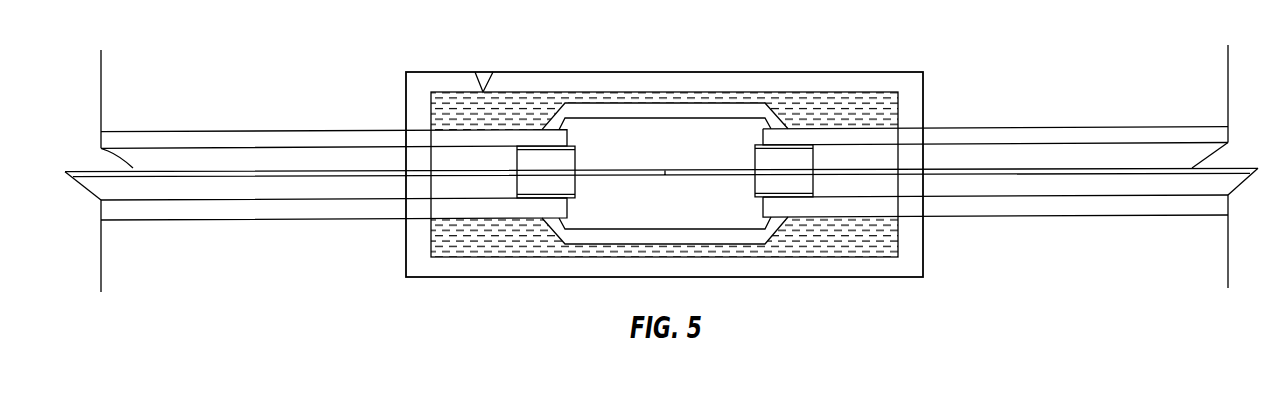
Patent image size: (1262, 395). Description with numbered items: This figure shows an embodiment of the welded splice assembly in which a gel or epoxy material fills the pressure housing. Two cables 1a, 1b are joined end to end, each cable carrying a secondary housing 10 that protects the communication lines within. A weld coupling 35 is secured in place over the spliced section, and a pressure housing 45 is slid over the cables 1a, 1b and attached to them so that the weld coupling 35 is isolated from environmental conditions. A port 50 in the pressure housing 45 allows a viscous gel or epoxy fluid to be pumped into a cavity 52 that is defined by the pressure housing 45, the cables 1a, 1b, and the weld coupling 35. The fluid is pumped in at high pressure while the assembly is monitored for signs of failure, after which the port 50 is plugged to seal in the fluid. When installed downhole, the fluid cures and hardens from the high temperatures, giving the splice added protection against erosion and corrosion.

The secondary housing 10 is at (661, 156).
The cable 1a is at (245, 131).
The cable 1b is at (975, 128).
The weld coupling 35 is at (710, 115).
The pressure housing 45 is at (648, 82).
The port 50 is at (488, 77).
The cavity 52 is at (800, 103).